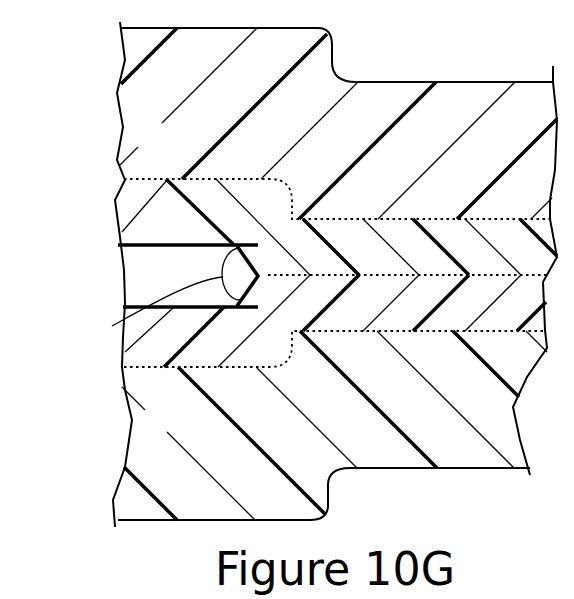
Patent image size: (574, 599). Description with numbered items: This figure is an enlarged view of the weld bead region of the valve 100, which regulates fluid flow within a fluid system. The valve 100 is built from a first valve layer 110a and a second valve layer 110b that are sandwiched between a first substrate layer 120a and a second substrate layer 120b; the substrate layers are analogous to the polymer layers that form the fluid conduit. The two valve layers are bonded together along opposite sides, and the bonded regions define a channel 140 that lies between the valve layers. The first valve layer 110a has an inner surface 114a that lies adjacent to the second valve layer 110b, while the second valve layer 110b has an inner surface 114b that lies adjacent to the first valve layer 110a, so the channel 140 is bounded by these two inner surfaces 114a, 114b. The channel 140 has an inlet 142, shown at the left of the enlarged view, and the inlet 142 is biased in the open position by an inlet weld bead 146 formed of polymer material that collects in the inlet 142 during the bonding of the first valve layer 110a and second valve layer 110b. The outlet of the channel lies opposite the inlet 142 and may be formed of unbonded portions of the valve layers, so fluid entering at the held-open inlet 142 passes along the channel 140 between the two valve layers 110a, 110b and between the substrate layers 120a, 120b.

The valve 100 is at (110, 196).
The first valve layer 110a is at (473, 243).
The second valve layer 110b is at (460, 303).
The inner surface 114a is at (184, 238).
The inner surface 114b is at (195, 309).
The first substrate layer 120a is at (367, 108).
The second substrate layer 120b is at (363, 443).
The channel 140 is at (143, 267).
The inlet 142 is at (143, 288).
The inlet weld bead 146 is at (112, 326).